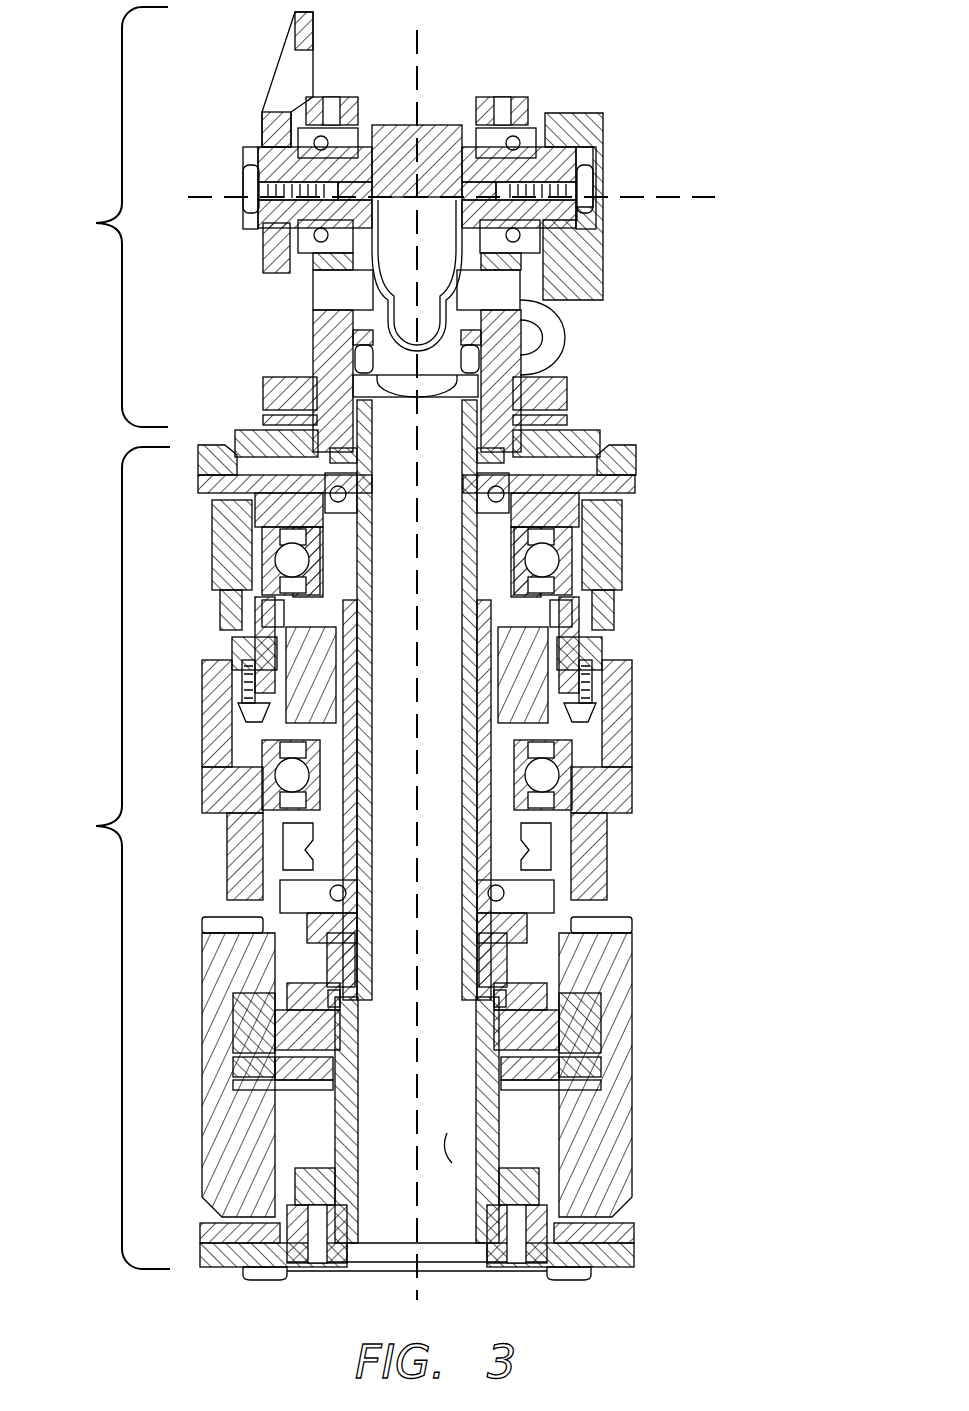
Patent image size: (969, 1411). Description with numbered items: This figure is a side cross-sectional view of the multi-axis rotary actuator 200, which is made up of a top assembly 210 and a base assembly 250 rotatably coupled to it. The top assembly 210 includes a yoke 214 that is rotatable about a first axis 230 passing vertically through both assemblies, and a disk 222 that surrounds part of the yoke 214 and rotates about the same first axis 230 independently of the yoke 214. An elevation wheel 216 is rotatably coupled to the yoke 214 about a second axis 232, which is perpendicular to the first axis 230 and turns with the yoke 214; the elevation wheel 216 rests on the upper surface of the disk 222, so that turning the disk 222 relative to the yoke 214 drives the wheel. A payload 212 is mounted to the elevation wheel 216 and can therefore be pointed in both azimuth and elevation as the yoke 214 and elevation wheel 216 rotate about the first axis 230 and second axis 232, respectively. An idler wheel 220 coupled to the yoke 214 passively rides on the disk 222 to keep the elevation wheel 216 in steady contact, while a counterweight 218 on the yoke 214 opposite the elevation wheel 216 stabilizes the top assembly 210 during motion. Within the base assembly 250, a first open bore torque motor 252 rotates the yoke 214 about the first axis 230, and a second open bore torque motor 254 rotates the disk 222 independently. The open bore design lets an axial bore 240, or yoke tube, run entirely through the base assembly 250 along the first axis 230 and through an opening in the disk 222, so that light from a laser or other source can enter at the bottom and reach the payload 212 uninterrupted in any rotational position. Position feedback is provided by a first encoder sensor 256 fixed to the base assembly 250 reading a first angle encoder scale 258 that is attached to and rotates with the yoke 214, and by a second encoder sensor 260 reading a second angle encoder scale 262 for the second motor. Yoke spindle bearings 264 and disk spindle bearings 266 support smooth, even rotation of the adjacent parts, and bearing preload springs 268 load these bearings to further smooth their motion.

The multi-axis rotary actuator 200 is at (688, 76).
The top assembly 210 is at (107, 217).
The payload 212 is at (435, 198).
The yoke 214 is at (520, 96).
The elevation wheel 216 is at (277, 70).
The counterweight 218 is at (603, 263).
The idler wheel 220 is at (552, 340).
The disk 222 is at (263, 377).
The first axis 230 is at (415, 65).
The second axis 232 is at (680, 193).
The axial bore 240 is at (449, 1140).
The base assembly 250 is at (108, 858).
The first open bore torque motor 252 is at (545, 1033).
The second open bore torque motor 254 is at (555, 665).
The first encoder sensor 256 is at (557, 1197).
The first angle encoder scale 258 is at (632, 1233).
The second encoder sensor 260 is at (623, 587).
The second angle encoder scale 262 is at (636, 490).
The yoke spindle bearing 264 is at (508, 492).
The disk spindle bearing 266 is at (527, 567).
The bearing preload spring 268 is at (527, 848).